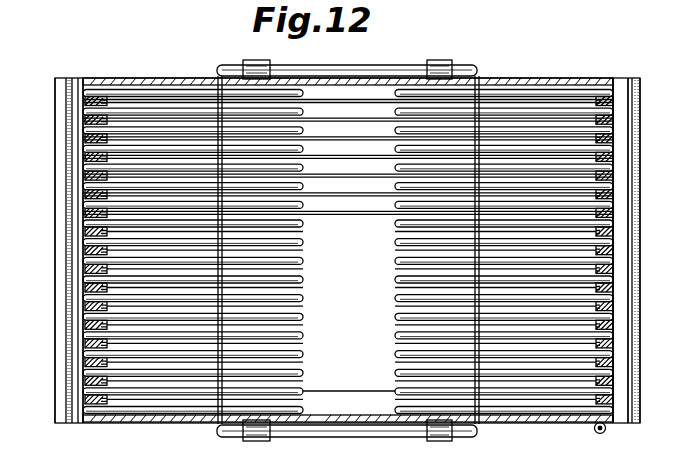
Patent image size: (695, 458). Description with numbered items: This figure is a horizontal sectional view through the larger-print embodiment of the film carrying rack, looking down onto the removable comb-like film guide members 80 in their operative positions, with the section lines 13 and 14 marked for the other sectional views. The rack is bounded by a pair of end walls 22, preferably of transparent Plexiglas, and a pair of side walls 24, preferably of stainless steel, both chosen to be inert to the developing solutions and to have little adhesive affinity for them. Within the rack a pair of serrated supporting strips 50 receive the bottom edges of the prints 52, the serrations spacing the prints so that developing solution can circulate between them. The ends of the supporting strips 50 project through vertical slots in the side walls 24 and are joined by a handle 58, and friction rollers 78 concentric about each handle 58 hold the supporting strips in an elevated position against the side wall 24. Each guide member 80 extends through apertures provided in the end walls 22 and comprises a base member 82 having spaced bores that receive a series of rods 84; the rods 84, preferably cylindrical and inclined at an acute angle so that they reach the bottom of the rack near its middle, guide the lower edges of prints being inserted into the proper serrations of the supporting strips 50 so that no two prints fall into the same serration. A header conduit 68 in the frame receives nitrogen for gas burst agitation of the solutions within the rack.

The section line 13- 13 is at (316, 309).
The section line 14- 14 is at (388, 373).
The end wall 22 is at (83, 120).
The side wall 24 is at (547, 63).
The serrated supporting strip 50 is at (221, 100).
The print 52 is at (330, 105).
The handle 58 is at (314, 54).
The header conduit 68 is at (607, 431).
The friction roller 78 is at (444, 50).
The comb-like film guide member 80 is at (55, 178).
The base member 82 is at (628, 199).
The rod 84 is at (605, 226).